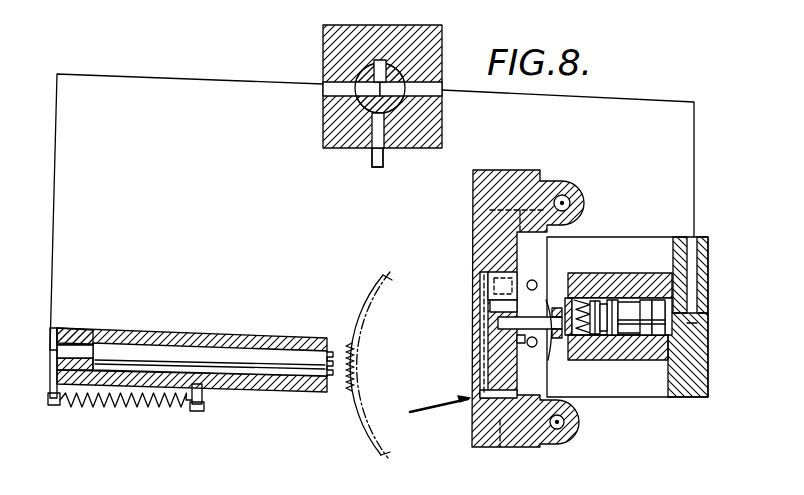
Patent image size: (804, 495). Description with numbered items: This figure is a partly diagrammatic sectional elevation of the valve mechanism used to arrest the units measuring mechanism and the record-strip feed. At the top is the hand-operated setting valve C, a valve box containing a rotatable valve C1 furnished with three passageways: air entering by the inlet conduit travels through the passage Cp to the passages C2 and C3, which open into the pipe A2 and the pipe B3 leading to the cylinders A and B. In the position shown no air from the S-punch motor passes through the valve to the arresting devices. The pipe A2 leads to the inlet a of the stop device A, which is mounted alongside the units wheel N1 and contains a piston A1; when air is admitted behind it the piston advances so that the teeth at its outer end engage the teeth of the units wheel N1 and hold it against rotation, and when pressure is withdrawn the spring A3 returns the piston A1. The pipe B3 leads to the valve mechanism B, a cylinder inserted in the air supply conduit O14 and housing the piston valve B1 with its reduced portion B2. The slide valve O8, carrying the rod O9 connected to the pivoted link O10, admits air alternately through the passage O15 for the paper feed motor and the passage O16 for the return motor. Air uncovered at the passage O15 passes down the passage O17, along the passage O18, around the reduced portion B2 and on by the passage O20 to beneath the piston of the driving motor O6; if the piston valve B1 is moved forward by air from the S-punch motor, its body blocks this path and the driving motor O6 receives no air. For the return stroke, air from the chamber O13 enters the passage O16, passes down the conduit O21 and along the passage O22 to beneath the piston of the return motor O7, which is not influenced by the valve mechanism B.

The setting valve C is at (433, 58).
The rotatable valve C1 is at (374, 72).
The passage Cp is at (364, 80).
The passage C2 is at (326, 106).
The passage C3 is at (430, 90).
The pipe A2 is at (57, 212).
The pipe B3 is at (652, 106).
The stop device A is at (140, 333).
The piston A1 is at (165, 355).
The inlet a is at (72, 353).
The spring A3 is at (90, 400).
The units wheel N1 is at (352, 382).
The valve mechanism B is at (590, 308).
The piston valve B1 is at (620, 294).
The reduced portion B2 is at (608, 352).
The driving motor O6 is at (575, 203).
The return motor O7 is at (572, 432).
The slide valve O8 is at (508, 307).
The rod O9 is at (502, 320).
The pivoted link O10 is at (614, 296).
The chamber O13 is at (490, 282).
The air supply conduit O14 is at (473, 393).
The passage O15 is at (500, 252).
The passage O16 is at (512, 352).
The passage O17 is at (555, 303).
The passage O18 is at (625, 300).
The passage O20 is at (493, 210).
The conduit O21 is at (547, 340).
The passage O22 is at (500, 447).